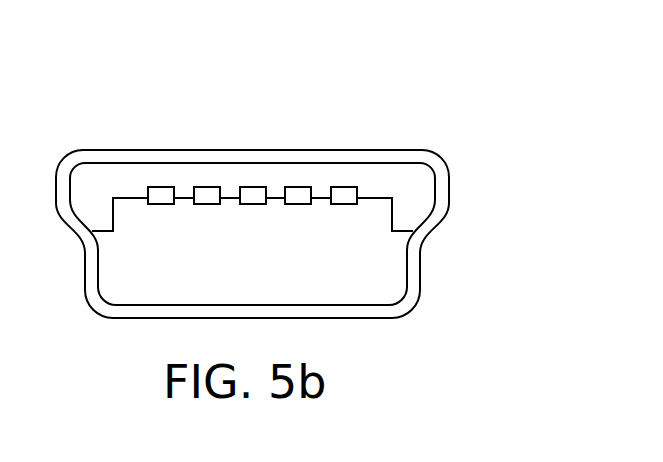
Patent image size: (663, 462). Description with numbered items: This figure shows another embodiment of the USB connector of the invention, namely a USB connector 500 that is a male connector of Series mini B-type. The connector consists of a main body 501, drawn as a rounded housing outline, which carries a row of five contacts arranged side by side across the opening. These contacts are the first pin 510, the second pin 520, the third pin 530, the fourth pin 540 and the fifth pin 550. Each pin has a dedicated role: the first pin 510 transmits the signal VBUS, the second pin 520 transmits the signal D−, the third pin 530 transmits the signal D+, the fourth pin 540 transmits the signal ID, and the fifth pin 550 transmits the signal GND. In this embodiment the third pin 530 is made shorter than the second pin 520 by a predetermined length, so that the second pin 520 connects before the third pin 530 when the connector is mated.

The USB connector 500 is at (309, 194).
The main body 501 is at (443, 193).
The first pin 510 is at (343, 192).
The second pin 520 is at (300, 192).
The third pin 530 is at (253, 192).
The fourth pin 540 is at (208, 192).
The fifth pin 550 is at (162, 192).